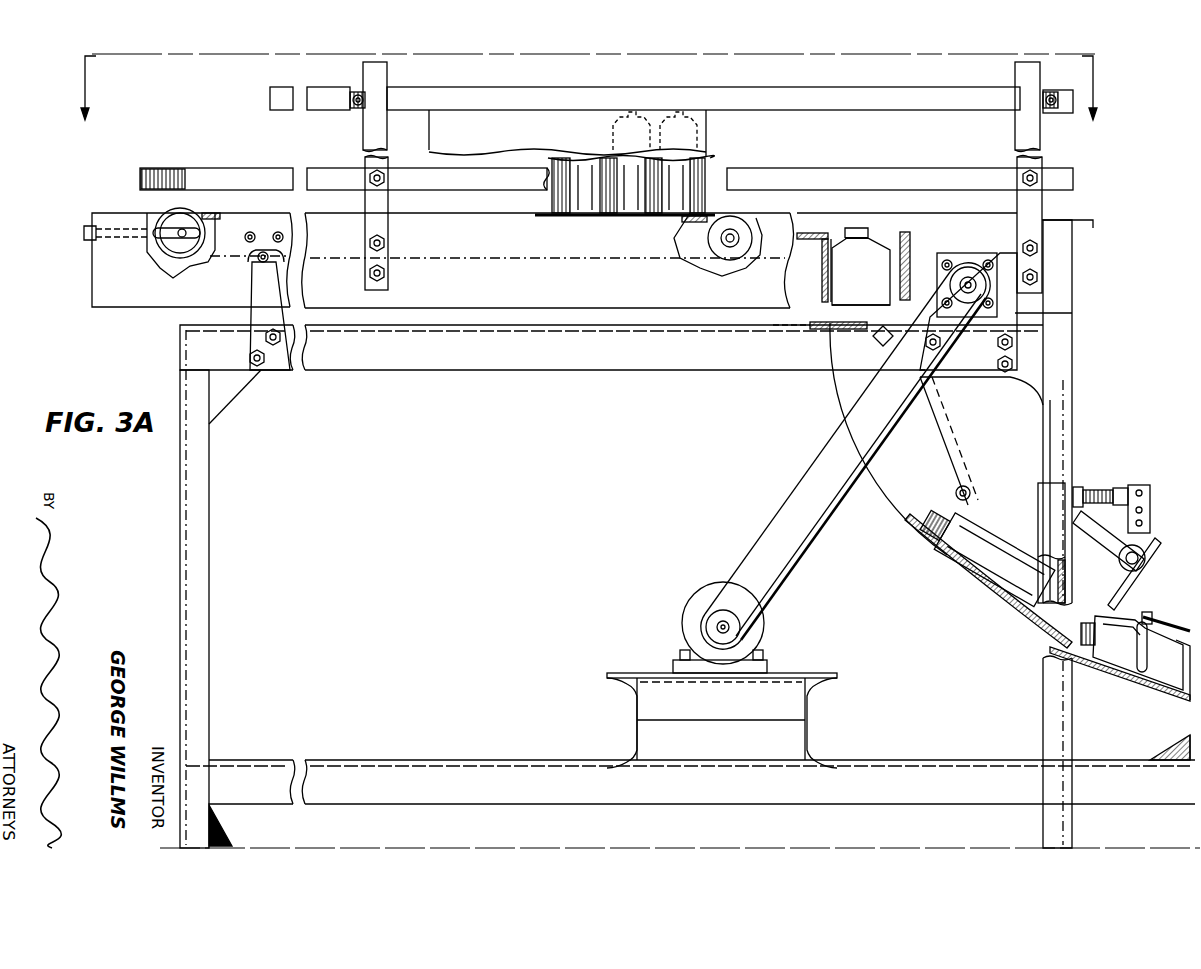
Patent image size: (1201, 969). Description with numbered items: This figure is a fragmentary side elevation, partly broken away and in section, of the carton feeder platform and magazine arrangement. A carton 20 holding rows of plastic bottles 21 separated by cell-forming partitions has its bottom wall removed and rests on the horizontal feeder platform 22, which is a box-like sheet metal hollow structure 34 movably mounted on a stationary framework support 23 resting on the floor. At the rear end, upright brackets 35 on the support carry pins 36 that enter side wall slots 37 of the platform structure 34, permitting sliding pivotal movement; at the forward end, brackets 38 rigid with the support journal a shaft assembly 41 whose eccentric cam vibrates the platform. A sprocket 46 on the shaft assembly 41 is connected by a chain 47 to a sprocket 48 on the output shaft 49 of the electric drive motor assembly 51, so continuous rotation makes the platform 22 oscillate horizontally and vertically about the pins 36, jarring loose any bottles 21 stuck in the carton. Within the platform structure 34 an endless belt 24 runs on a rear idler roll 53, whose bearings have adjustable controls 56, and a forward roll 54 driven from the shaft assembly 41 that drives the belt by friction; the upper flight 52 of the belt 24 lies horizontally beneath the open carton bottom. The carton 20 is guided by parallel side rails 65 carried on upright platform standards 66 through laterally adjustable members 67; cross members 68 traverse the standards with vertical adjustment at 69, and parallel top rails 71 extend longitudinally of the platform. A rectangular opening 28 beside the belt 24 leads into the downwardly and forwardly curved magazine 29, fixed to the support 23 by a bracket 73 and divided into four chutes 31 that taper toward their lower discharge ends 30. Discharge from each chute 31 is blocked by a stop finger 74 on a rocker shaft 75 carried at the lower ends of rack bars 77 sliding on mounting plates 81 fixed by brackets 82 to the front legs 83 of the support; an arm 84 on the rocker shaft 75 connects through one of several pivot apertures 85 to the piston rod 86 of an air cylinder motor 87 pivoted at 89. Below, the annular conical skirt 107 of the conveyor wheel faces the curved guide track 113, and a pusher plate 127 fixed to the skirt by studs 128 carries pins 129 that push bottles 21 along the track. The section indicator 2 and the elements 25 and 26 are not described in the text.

The section line 2- 2 is at (588, 87).
The carton 20 is at (567, 133).
The plastic bottles 21 is at (1170, 698).
The horizontal feeder platform 22 is at (152, 298).
The stationary framework support 23 is at (380, 350).
The belt 24 is at (712, 262).
The roller 25 is at (180, 212).
The guide rail 26 is at (126, 212).
The rectangular opening 28 is at (826, 238).
The magazine structure 29 is at (900, 506).
The lower discharge ends 30 is at (1100, 602).
The chutes 31 is at (840, 238).
The box-like sheet metal hollow structure 34 is at (510, 296).
The brackets 35 is at (262, 298).
The pins 36 is at (264, 262).
The side wall slots 37 is at (254, 258).
The brackets 38 is at (1010, 325).
The shaft assembly 41 is at (975, 284).
The sprocket 46 is at (1000, 372).
The chain 47 is at (792, 568).
The sprocket 48 is at (745, 632).
The output shaft 49 is at (732, 620).
The electric drive motor assembly 51 is at (690, 647).
The upper flight 52 is at (538, 216).
The rear roll 53 is at (170, 243).
The forward roll 54 is at (740, 226).
The adjustable controls 56 is at (108, 242).
The side rails 65 is at (245, 183).
The upright platform standards 66 is at (385, 243).
The members 67 is at (370, 183).
The cross members 68 is at (352, 92).
The vertical adjustment 69 is at (348, 102).
The top rails 71 is at (275, 100).
The bracket 73 is at (790, 332).
The stop finger 74 is at (1124, 590).
The rocker shaft 75 is at (1146, 551).
The rack bars 77 is at (876, 340).
The mounting plates 81 is at (1020, 410).
The brackets 82 is at (1046, 580).
The front legs 83 is at (1062, 450).
The arm 84 is at (1150, 515).
The pivot apertures 85 is at (1142, 490).
The piston rod 86 is at (1100, 496).
The air cylinder motor 87 is at (1078, 482).
The pivot 89 is at (966, 488).
The annular conical skirt 107 is at (1190, 705).
The curved guide track 113 is at (1105, 670).
The plate 127 is at (1165, 617).
The studs 128 is at (1159, 608).
The pins 129 is at (1138, 690).